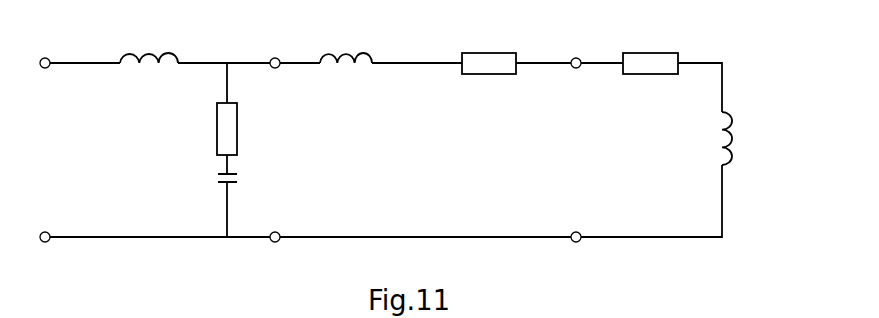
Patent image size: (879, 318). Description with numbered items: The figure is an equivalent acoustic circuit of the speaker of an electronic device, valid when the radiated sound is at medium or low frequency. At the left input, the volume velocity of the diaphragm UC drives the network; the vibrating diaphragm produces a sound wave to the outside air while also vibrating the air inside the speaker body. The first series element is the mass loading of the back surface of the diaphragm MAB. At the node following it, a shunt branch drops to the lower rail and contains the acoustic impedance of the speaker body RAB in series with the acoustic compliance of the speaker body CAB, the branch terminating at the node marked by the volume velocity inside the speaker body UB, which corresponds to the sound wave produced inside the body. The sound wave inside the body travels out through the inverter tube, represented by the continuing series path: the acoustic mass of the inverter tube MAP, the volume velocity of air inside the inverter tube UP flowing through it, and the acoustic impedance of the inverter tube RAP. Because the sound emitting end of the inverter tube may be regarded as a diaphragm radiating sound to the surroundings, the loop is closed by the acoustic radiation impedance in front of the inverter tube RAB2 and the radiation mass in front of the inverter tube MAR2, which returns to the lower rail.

The volume velocity of the diaphragm UC is at (52, 24).
The mass loading of the back surface of the diaphragm MAB is at (149, 36).
The acoustic impedance of the speaker body RAB is at (254, 129).
The acoustic compliance of the speaker body CAB is at (189, 177).
The volume velocity inside the speaker body UB is at (255, 214).
The acoustic mass of the inverter tube MAP is at (342, 36).
The volume velocity of air inside the inverter tube UP is at (417, 24).
The acoustic impedance of the inverter tube RAP is at (489, 42).
The acoustic radiation impedance in front of the inverter tube RAB2 is at (650, 42).
The radiation mass in front of the inverter tube MAR2 is at (760, 138).